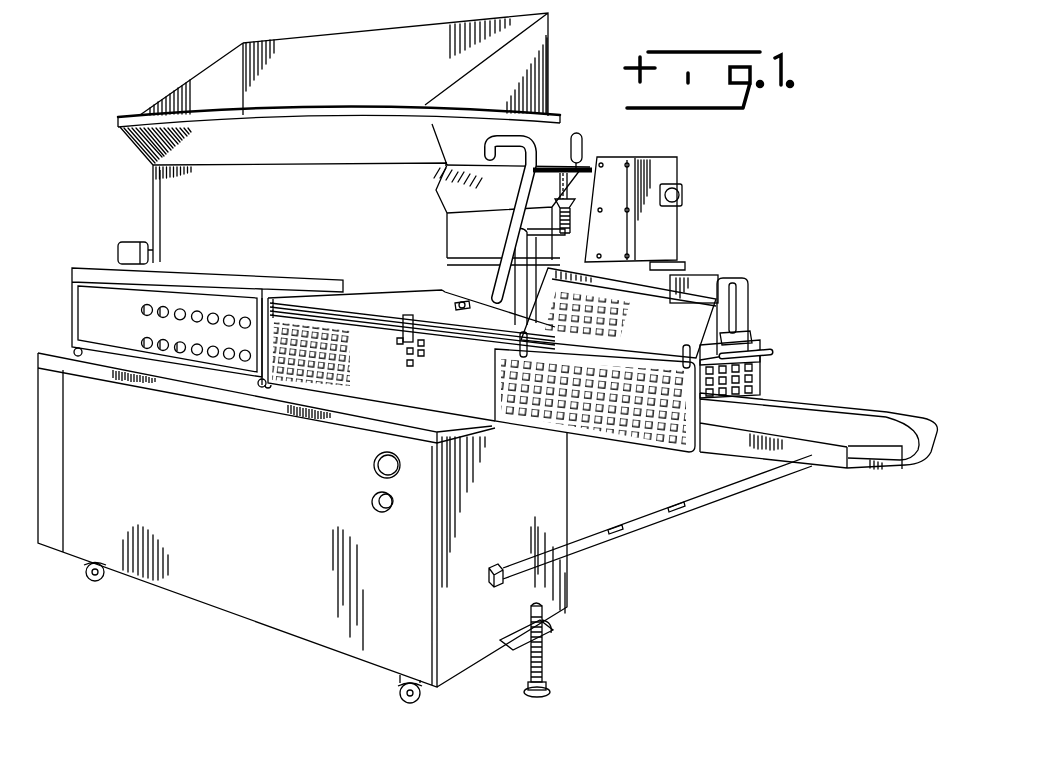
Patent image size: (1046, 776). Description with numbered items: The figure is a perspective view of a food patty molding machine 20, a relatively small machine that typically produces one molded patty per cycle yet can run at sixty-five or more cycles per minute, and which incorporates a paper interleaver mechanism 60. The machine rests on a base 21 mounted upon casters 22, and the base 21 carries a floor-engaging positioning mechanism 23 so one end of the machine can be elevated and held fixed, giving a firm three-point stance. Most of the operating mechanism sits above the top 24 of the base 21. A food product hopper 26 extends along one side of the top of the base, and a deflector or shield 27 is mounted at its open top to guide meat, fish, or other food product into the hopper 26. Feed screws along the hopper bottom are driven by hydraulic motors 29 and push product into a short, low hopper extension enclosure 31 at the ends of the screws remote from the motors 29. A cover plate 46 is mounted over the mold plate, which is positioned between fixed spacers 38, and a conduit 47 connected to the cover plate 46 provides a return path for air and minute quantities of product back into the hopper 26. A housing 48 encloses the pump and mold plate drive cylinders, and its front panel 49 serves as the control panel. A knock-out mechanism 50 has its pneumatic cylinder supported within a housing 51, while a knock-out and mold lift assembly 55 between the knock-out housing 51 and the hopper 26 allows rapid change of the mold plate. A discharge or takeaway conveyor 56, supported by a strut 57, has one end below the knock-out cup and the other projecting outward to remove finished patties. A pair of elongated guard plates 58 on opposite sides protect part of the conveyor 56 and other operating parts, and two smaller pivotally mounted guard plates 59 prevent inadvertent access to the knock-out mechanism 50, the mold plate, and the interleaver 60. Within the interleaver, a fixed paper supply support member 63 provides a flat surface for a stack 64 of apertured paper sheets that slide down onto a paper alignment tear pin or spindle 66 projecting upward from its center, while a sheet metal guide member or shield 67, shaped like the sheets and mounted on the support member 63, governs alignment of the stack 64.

The food patty molding machine 20 is at (182, 66).
The base 21 is at (247, 603).
The casters 22 is at (97, 577).
The floor-engaging positioning mechanism 23 is at (547, 652).
The top 24 is at (318, 420).
The food product hopper 26 is at (158, 197).
The deflector or shield 27 is at (541, 67).
The hydraulic motors 29 is at (117, 250).
The hopper extension enclosure 31 is at (480, 262).
The fixed spacers 38 is at (468, 328).
The cover plate 46 is at (450, 300).
The conduit 47 is at (490, 143).
The housing 48 is at (223, 377).
The front panel 49 is at (122, 337).
The knock-out mechanism 50 is at (667, 143).
The housing 51 is at (672, 218).
The knock-out and mold lift assembly 55 is at (594, 146).
The discharge or takeaway conveyor 56 is at (917, 472).
The strut 57 is at (718, 496).
The elongated guard plates 58 is at (553, 438).
The pivotally mounted guard plates 59 is at (656, 343).
The paper interleaver mechanism 60 is at (752, 312).
The paper supply support member 63 is at (768, 360).
The stack of paper sheets 64 is at (737, 315).
The paper alignment tear pin or spindle 66 is at (730, 320).
The sheet metal guide member or shield 67 is at (722, 282).